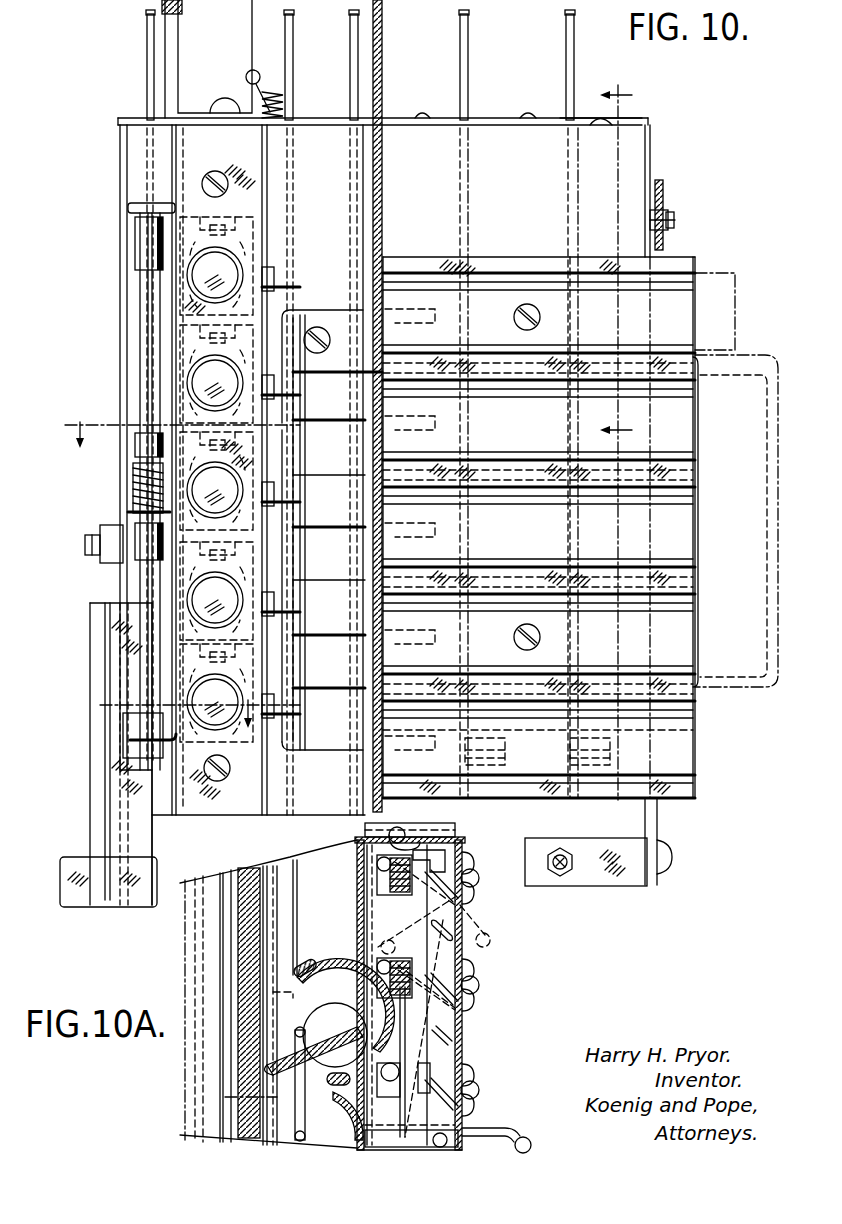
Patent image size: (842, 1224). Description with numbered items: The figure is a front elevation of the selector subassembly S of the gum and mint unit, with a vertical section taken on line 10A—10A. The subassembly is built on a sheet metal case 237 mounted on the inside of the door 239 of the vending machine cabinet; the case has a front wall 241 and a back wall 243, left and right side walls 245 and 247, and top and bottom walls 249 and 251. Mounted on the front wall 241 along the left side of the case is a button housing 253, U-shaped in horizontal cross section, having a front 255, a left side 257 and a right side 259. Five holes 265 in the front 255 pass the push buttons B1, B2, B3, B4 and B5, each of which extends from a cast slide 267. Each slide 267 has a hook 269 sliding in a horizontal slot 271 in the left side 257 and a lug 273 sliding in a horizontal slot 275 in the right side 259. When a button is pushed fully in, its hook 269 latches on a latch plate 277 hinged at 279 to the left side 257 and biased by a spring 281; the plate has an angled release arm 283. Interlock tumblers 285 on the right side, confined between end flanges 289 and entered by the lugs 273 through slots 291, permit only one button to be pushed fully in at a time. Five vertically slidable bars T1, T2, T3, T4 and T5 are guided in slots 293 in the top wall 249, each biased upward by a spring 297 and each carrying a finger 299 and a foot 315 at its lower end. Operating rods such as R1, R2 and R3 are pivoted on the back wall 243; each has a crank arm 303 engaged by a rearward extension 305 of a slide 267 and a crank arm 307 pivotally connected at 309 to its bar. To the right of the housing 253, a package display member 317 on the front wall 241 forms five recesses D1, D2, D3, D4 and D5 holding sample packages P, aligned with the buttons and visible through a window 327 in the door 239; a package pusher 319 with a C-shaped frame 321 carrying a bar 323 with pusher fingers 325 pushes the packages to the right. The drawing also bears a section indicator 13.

In FIG. 10, the vertically slidable bar T1 is at (149, 100).
In FIG. 10, the vertically slidable bar T2 is at (294, 72).
In FIG. 10, the vertically slidable bar T3 is at (353, 53).
In FIG. 10, the vertically slidable bar T4 is at (466, 56).
In FIG. 10, the vertically slidable bar T5 is at (572, 47).
In FIG. 10A, the vertically slidable bar T5 is at (372, 832).
In FIG. 10, the push button B1 is at (240, 266).
In FIG. 10, the push button B2 is at (240, 374).
In FIG. 10, the push button B3 is at (240, 481).
In FIG. 10, the push button B4 is at (240, 591).
In FIG. 10, the push button B5 is at (240, 693).
In FIG. 10, the package-holding recess D1 is at (503, 350).
In FIG. 10A, the package-holding recess D1 is at (340, 1052).
In FIG. 10, the package-holding recess D2 is at (527, 460).
In FIG. 10, the package-holding recess D3 is at (535, 565).
In FIG. 10, the package-holding recess D4 is at (488, 665).
In FIG. 10, the package-holding recess D5 is at (680, 775).
In FIG. 10A, the operating rod R1 is at (477, 878).
In FIG. 10A, the operating rod R2 is at (477, 985).
In FIG. 10A, the operating rod R3 is at (477, 1090).
In FIG. 10, the package P is at (712, 275).
In FIG. 10A, the package P is at (293, 986).
In FIG. 10, the selector subassembly S is at (132, 70).
In FIG. 10A, the selector subassembly S is at (176, 984).
In FIG. 10, the section line 10A is at (627, 436).
In FIG. 10, the section line 13 is at (176, 566).
In FIG. 10, the sheet metal case 237 is at (648, 118).
In FIG. 10A, the sheet metal case 237 is at (452, 840).
In FIG. 10A, the door 239 is at (185, 1095).
In FIG. 10, the front wall 241 is at (645, 150).
In FIG. 10A, the front wall 241 is at (358, 886).
In FIG. 10, the back wall 243 is at (598, 842).
In FIG. 10A, the back wall 243 is at (517, 966).
In FIG. 10, the left side wall 245 is at (120, 158).
In FIG. 10, the right side wall 247 is at (655, 161).
In FIG. 10, the top wall 249 is at (425, 118).
In FIG. 10, the bottom wall 251 is at (632, 720).
In FIG. 10, the button housing 253 is at (162, 420).
In FIG. 10, the front of housing 255 is at (207, 455).
In FIG. 10, the left side of housing 257 is at (176, 148).
In FIG. 10, the right side of housing 259 is at (268, 185).
In FIG. 10, the hole 265 is at (214, 502).
In FIG. 10, the slide 267 is at (296, 457).
In FIG. 10, the hook 269 is at (140, 295).
In FIG. 10, the horizontal slot 271 is at (190, 489).
In FIG. 10, the lug 273 is at (275, 265).
In FIG. 10, the horizontal slot 275 is at (243, 255).
In FIG. 10, the latch plate 277 is at (162, 340).
In FIG. 10, the hinge 279 is at (128, 208).
In FIG. 10, the spring 281 is at (133, 490).
In FIG. 10, the release arm 283 is at (92, 668).
In FIG. 10, the interlock tumbler 285 is at (275, 290).
In FIG. 10, the end flange 289 is at (250, 752).
In FIG. 10, the slot 291 is at (275, 275).
In FIG. 10A, the slot 293 is at (460, 861).
In FIG. 10, the spring 297 is at (278, 94).
In FIG. 10A, the spring 297 is at (392, 899).
In FIG. 10A, the finger 299 is at (517, 1135).
In FIG. 10A, the crank arm 303 is at (472, 930).
In FIG. 10A, the rearward extension 305 is at (462, 966).
In FIG. 10A, the crank arm 307 is at (435, 980).
In FIG. 10A, the pivotal connection 309 is at (377, 862).
In FIG. 10, the foot 315 is at (350, 766).
In FIG. 10, the package display member 317 is at (527, 254).
In FIG. 10A, the package display member 317 is at (338, 992).
In FIG. 10, the package pusher 319 is at (752, 360).
In FIG. 10A, the package pusher 319 is at (402, 1100).
In FIG. 10, the C-shaped frame 321 is at (324, 345).
In FIG. 10A, the C-shaped frame 321 is at (339, 1106).
In FIG. 10, the bar 323 is at (296, 560).
In FIG. 10A, the bar 323 is at (295, 1040).
In FIG. 10, the pusher finger 325 is at (404, 761).
In FIG. 10A, the pusher finger 325 is at (300, 1028).
In FIG. 10A, the window 327 is at (240, 1070).